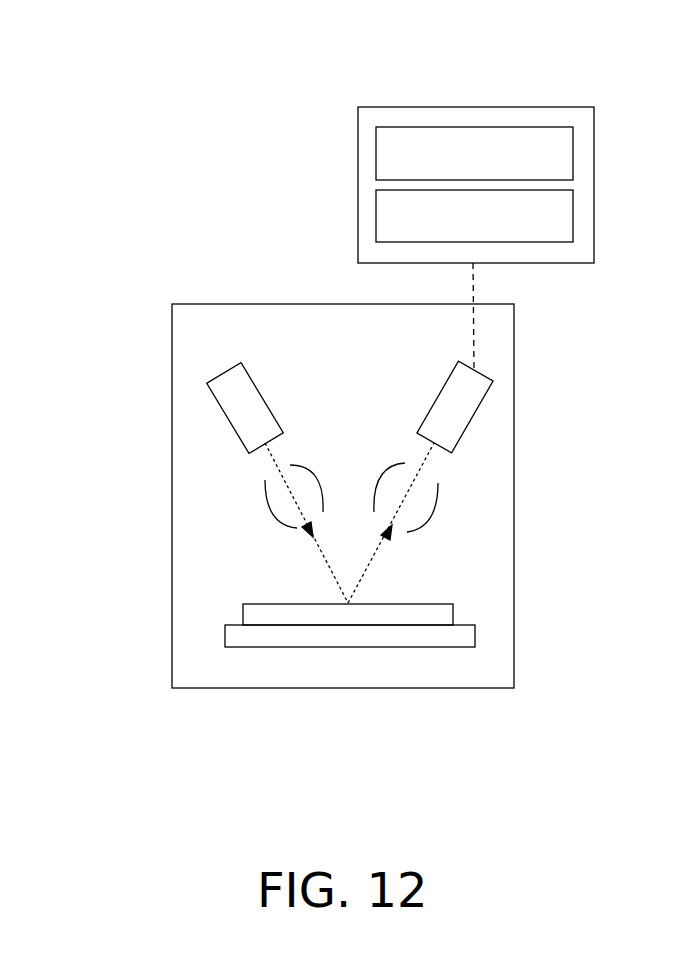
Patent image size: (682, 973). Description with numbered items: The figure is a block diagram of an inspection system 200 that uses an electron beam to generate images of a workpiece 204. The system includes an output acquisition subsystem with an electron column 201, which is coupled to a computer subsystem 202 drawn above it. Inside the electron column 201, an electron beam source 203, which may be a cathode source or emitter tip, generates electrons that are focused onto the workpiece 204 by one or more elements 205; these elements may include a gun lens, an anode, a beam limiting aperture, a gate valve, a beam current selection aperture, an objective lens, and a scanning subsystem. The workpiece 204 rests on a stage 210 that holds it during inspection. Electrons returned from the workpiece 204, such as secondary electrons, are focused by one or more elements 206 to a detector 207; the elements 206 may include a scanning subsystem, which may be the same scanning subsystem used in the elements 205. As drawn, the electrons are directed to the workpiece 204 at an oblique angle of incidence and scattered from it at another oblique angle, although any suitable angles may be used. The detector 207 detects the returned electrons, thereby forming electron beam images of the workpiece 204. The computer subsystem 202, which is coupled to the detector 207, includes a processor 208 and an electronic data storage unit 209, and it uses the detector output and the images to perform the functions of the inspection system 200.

The inspection system 200 is at (177, 130).
The electron column 201 is at (323, 304).
The computer subsystem 202 is at (473, 107).
The electron beam source 203 is at (248, 373).
The workpiece 204 is at (400, 603).
The one or more elements 205 is at (275, 518).
The one or more elements 206 is at (430, 513).
The detector 207 is at (447, 380).
The processor 208 is at (455, 166).
The electronic data storage unit 209 is at (455, 228).
The stage 210 is at (350, 647).